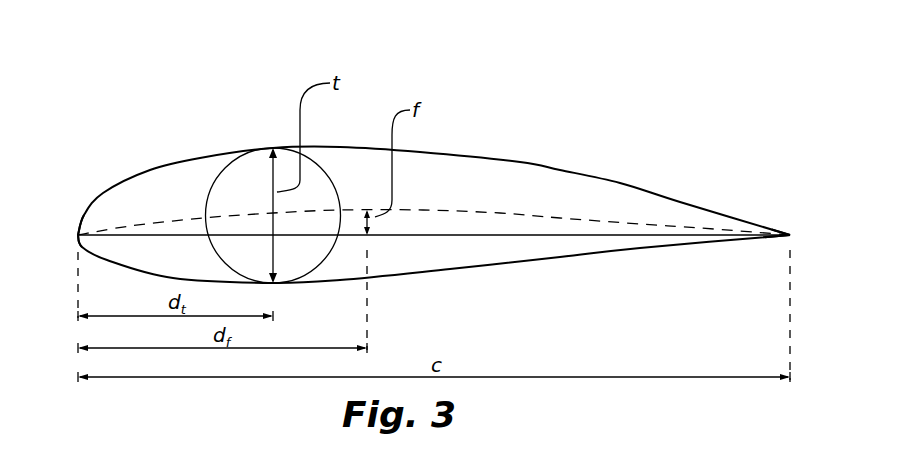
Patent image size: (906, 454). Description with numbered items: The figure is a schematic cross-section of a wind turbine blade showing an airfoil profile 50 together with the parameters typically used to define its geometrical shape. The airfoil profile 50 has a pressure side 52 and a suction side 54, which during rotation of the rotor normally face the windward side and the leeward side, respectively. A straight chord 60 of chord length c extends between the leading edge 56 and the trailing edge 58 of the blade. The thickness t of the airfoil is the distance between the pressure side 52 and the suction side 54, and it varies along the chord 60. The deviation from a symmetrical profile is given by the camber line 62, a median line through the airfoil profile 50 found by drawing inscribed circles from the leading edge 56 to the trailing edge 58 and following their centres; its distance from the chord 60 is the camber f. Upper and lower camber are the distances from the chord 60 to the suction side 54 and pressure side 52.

The airfoil profile 50 is at (418, 166).
The pressure side 52 is at (573, 254).
The suction side 54 is at (520, 162).
The leading edge 56 is at (78, 235).
The trailing edge 58 is at (790, 235).
The chord 60 is at (607, 235).
The camber line 62 is at (423, 210).